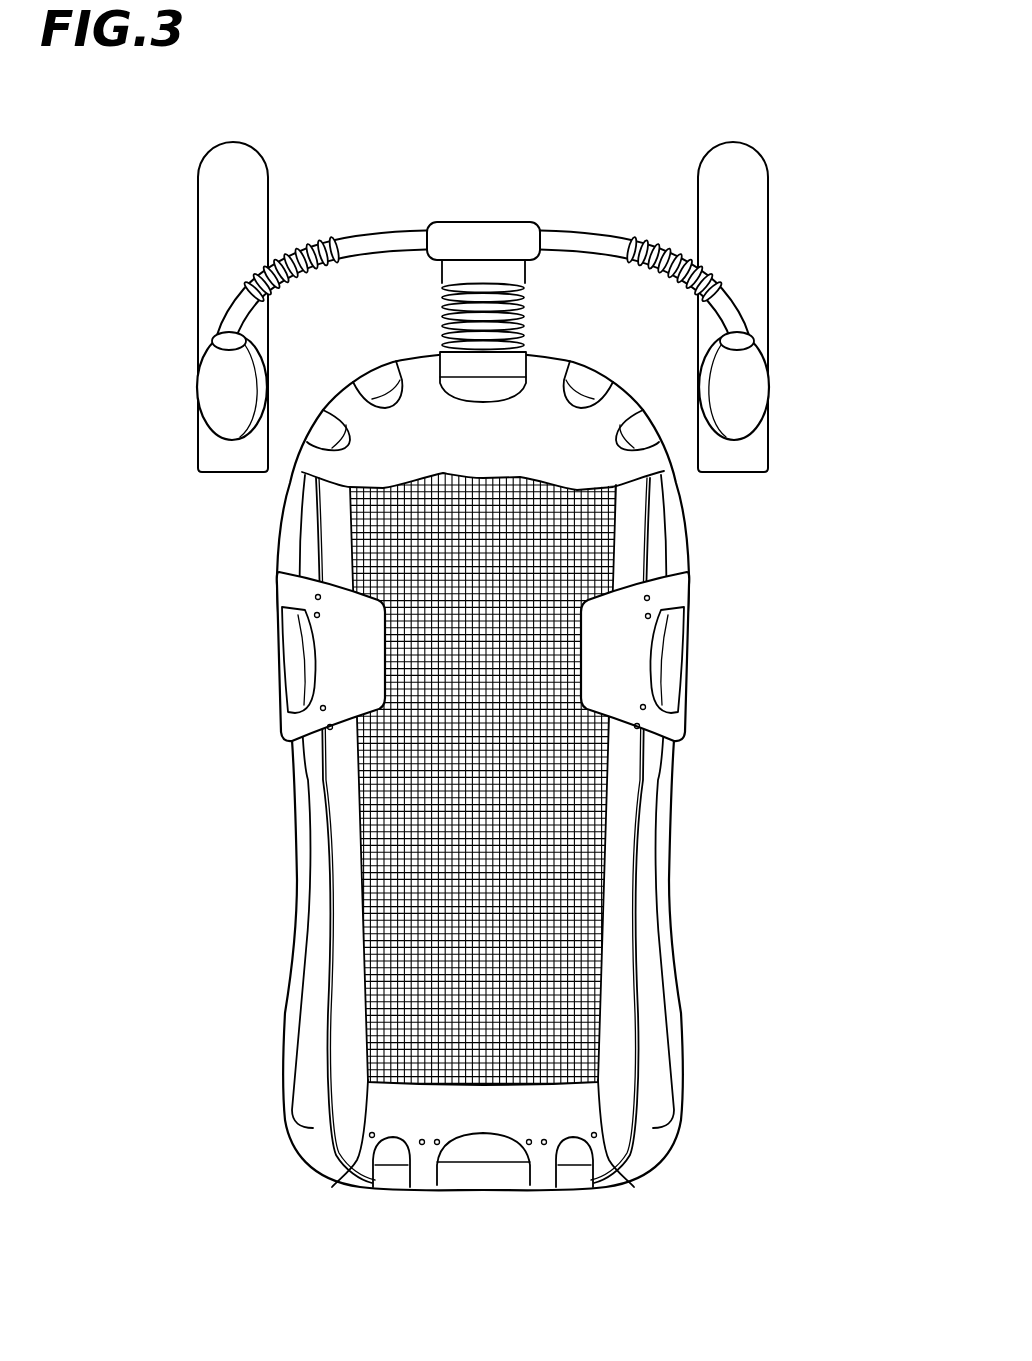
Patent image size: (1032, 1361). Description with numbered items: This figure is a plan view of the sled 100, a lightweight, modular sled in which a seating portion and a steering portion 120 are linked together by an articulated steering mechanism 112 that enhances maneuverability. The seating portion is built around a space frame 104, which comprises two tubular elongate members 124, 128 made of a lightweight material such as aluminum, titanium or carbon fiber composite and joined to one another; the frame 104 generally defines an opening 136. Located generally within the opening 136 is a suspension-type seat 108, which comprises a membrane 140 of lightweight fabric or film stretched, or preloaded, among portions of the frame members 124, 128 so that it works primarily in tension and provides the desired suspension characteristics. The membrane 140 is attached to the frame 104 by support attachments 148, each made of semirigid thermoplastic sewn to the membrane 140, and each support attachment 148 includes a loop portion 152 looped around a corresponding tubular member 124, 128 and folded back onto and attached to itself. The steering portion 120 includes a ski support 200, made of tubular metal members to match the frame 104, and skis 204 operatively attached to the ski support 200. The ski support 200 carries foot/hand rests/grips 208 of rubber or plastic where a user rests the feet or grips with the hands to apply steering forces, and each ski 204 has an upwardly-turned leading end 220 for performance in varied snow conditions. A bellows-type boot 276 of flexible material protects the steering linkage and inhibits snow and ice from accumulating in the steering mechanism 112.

The sled 100 is at (465, 816).
The space frame 104 is at (712, 535).
The seat 108 is at (614, 965).
The steering mechanism 112 is at (570, 317).
The steering portion 120 is at (485, 259).
The elongate member 124 is at (275, 655).
The elongate member 128 is at (485, 1195).
The opening 136 is at (355, 1072).
The membrane 140 is at (525, 832).
The support attachment 148 is at (622, 660).
The loop portion 152 is at (300, 727).
The ski support 200 is at (603, 218).
The ski 204 is at (183, 287).
The foot/hand rest/grip 208 is at (305, 230).
The upwardly-turned leading end 220 is at (232, 142).
The boot 276 is at (440, 320).